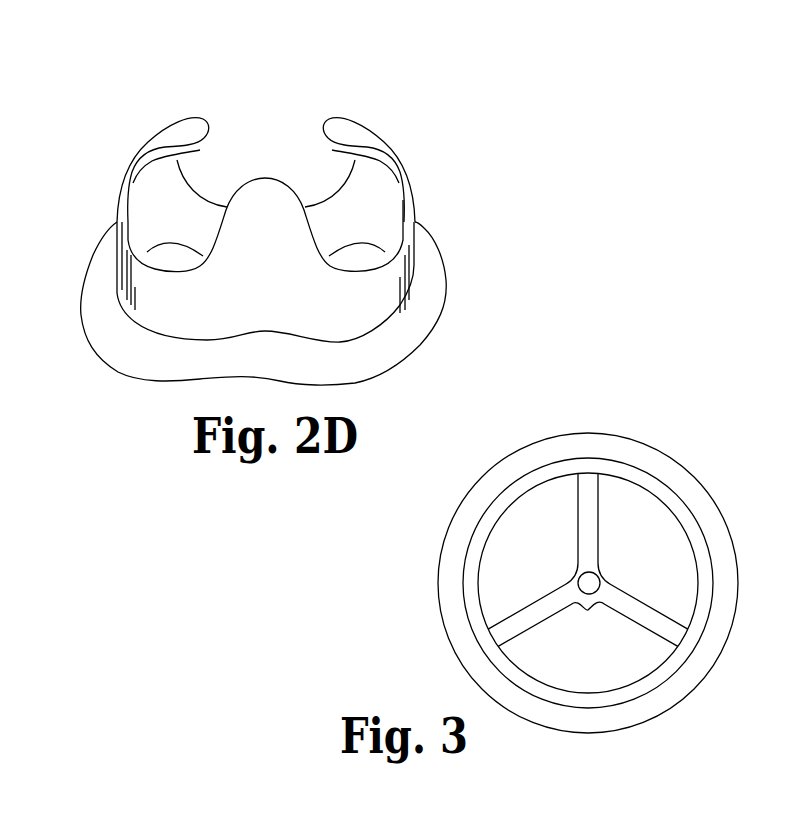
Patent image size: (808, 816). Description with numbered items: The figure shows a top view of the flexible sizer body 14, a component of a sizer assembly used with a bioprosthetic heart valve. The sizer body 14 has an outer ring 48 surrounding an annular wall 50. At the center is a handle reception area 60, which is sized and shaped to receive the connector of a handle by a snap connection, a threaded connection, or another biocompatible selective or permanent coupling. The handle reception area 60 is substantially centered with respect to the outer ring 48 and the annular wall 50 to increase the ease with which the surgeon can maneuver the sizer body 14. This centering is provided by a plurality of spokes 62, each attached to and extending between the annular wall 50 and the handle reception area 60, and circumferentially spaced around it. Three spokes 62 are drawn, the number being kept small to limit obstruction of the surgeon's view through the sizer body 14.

In FIG. 2D, the outer ring 48 is at (100, 280).
In FIG. 3, the outer ring 48 is at (718, 533).
In FIG. 3, the sizer body 14 is at (617, 566).
In FIG. 3, the annular wall 50 is at (634, 583).
In FIG. 3, the handle reception area 60 is at (604, 575).
In FIG. 3, the spokes 62 is at (585, 528).